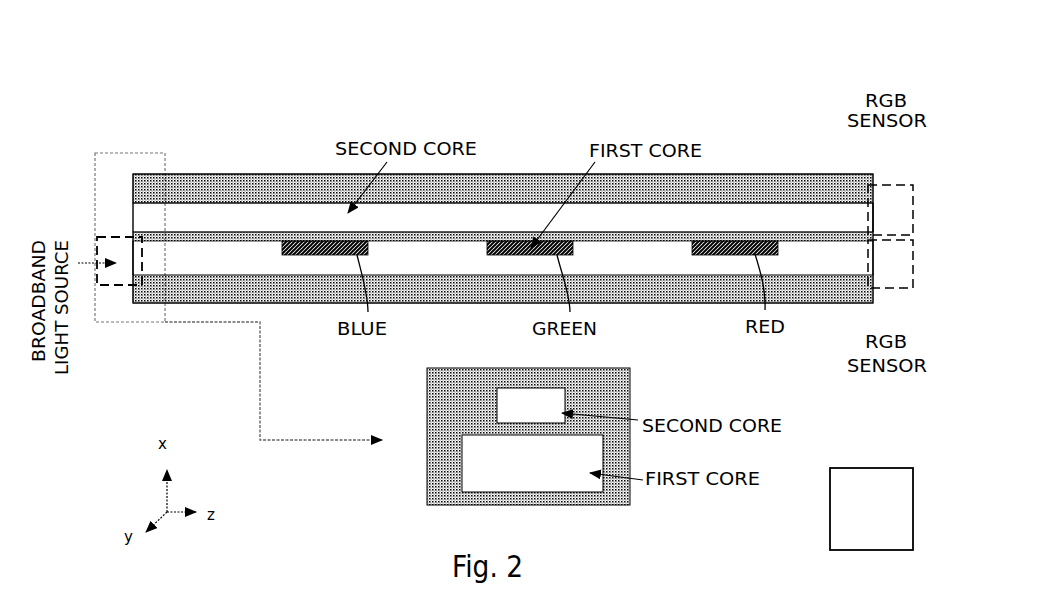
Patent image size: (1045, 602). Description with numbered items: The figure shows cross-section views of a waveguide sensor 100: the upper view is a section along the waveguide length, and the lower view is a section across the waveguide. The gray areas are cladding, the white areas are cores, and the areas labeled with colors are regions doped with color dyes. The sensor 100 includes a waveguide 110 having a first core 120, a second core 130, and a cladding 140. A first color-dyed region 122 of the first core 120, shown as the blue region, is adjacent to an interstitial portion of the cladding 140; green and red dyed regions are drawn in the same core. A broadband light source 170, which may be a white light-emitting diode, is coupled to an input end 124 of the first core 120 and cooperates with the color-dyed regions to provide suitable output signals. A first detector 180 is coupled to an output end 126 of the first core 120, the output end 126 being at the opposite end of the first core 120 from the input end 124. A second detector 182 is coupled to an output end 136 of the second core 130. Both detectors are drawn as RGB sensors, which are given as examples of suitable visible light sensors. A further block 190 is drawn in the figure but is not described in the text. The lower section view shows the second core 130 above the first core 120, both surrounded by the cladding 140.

The sensor 100 is at (273, 78).
The waveguide 110 is at (200, 174).
The first core 120 is at (225, 276).
The first color-dyed region 122 is at (317, 256).
The input end 124 is at (133, 252).
The output end 126 is at (873, 253).
The second core 130 is at (252, 203).
The output end 136 is at (873, 212).
The cladding 140 is at (777, 174).
The broadband light source 170 is at (120, 286).
The first detector 180 is at (897, 288).
The second detector 182 is at (898, 185).
The controller 190 is at (892, 522).